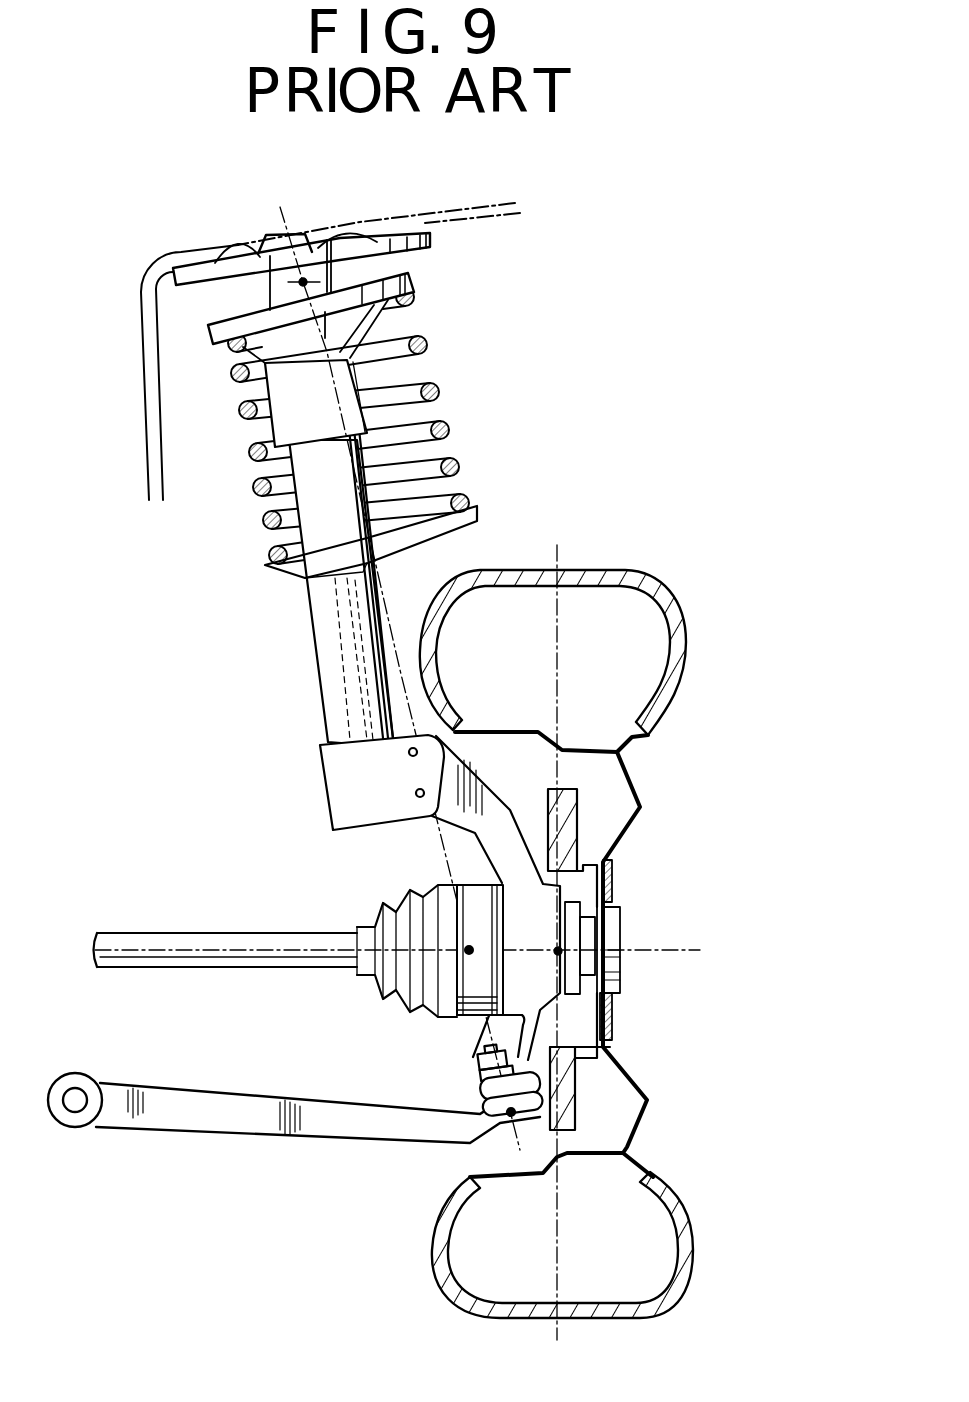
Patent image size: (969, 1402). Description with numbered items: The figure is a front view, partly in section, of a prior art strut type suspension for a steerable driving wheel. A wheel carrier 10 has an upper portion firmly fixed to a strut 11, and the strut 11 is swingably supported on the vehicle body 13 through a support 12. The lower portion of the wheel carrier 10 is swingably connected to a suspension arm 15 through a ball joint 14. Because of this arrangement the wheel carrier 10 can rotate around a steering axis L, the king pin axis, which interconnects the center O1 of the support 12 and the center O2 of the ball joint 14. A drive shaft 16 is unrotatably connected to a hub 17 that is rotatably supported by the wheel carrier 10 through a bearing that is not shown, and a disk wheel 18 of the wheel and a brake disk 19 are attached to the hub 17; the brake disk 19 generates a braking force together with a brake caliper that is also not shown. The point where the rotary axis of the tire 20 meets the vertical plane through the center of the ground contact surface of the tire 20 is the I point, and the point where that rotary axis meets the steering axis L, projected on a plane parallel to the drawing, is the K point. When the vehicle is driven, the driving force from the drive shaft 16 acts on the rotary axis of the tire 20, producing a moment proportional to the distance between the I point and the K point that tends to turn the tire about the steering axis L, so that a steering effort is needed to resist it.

The wheel carrier 10 is at (485, 802).
The strut 11 is at (365, 415).
The support 12 is at (277, 280).
The vehicle body 13 is at (141, 290).
The ball joint 14 is at (570, 1107).
The suspension arm 15 is at (320, 1120).
The drive shaft 16 is at (262, 978).
The hub 17 is at (573, 907).
The disk wheel 18 is at (630, 770).
The brake disk 19 is at (573, 833).
The tire 20 is at (630, 572).
The steering axis L is at (303, 220).
The center of the support O1 is at (305, 280).
The center of the ball joint O2 is at (493, 1124).
The K point K is at (470, 950).
The I point I is at (558, 950).